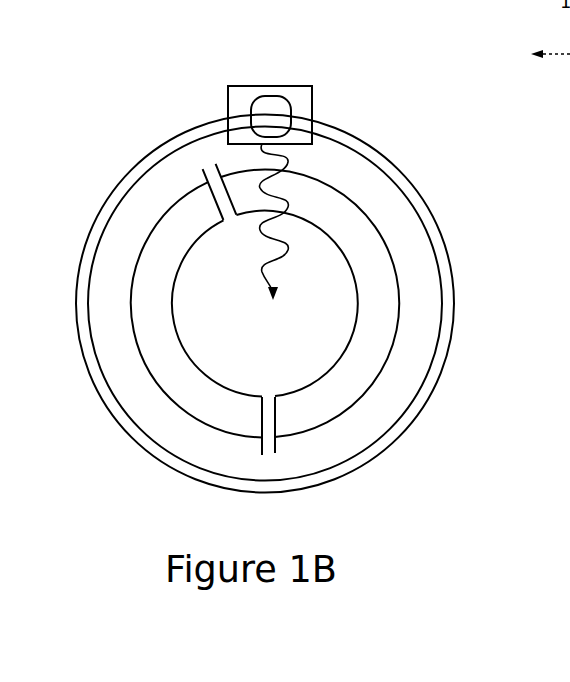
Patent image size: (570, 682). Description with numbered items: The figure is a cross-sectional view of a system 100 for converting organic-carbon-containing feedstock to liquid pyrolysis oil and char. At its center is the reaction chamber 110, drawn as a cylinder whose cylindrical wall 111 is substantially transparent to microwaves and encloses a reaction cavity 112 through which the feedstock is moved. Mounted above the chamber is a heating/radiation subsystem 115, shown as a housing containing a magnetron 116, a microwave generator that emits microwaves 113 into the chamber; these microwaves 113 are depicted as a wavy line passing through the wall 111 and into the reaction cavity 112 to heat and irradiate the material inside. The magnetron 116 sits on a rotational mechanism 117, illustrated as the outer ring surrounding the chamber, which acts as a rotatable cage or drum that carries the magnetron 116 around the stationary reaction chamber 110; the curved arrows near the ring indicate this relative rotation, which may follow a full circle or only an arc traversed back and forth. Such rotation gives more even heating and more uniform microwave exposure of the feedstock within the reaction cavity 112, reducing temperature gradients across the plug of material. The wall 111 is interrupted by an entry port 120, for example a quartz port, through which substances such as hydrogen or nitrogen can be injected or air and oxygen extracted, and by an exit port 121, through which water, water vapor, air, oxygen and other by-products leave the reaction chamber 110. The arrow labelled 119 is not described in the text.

The system 100 is at (279, 27).
The reaction chamber 110 is at (380, 202).
The cylindrical wall 111 is at (396, 262).
The reaction cavity 112 is at (333, 320).
The microwaves 113 is at (262, 171).
The heating/radiation subsystem 115 is at (303, 103).
The magnetron 116 is at (268, 110).
The rotational mechanism 117 is at (452, 306).
The direction of rotation 119 is at (195, 110).
The entry port 120 is at (236, 214).
The exit port 121 is at (275, 440).